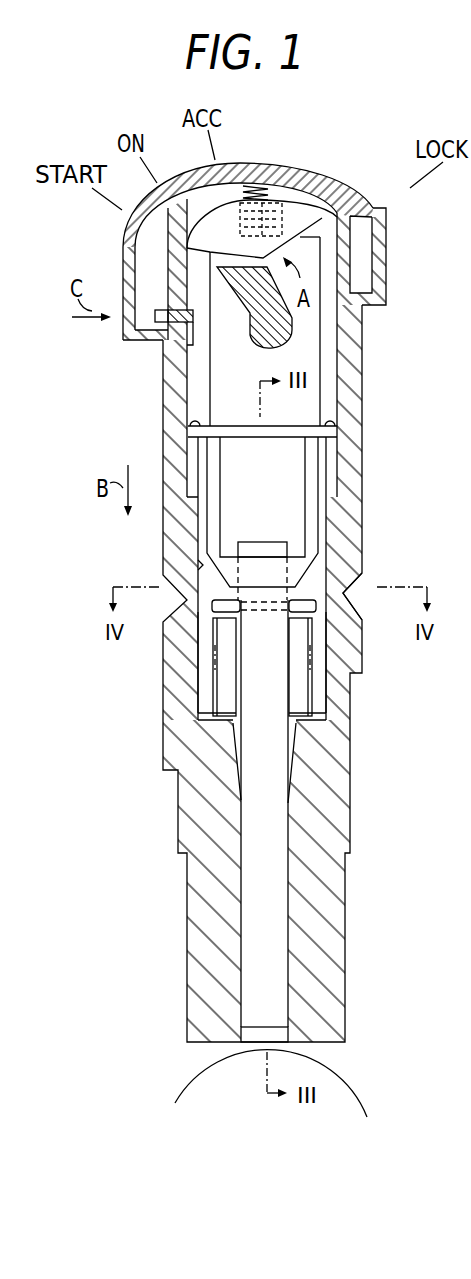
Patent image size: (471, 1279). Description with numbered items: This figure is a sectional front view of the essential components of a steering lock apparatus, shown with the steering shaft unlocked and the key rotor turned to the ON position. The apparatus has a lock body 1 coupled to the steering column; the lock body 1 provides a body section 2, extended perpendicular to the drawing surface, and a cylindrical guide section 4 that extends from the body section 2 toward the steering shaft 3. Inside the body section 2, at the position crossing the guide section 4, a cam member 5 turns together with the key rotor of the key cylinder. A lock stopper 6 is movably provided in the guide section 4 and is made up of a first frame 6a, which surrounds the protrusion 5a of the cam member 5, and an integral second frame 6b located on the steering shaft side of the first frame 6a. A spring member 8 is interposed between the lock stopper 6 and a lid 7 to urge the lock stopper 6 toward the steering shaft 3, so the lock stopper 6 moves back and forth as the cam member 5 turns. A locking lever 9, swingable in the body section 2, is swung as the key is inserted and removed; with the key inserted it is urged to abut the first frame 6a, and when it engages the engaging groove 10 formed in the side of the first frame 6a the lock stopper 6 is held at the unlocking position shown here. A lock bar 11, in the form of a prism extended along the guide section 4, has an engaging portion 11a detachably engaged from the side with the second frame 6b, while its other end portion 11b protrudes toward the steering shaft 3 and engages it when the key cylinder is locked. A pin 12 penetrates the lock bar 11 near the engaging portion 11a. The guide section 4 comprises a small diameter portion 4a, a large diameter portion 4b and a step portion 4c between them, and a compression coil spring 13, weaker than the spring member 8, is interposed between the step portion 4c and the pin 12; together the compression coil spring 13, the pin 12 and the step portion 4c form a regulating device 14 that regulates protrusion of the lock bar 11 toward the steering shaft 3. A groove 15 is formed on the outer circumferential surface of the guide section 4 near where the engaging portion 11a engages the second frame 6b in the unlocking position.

The lock body 1 is at (402, 251).
The body section 2 is at (378, 288).
The steering shaft 3 is at (358, 1078).
The guide section 4 is at (352, 778).
The small diameter portion 4a is at (240, 808).
The large diameter portion 4b is at (200, 565).
The step portion 4c is at (210, 712).
The cam member 5 is at (300, 327).
The protrusion 5a is at (212, 262).
The lock stopper 6 is at (317, 457).
The first frame 6a is at (197, 377).
The second frame 6b is at (213, 522).
The lid 7 is at (264, 190).
The spring member 8 is at (305, 175).
The locking lever 9 is at (157, 315).
The engaging groove 10 is at (183, 348).
The lock bar 11 is at (283, 763).
The engaging portion 11a is at (268, 562).
The other end portion 11b is at (297, 1033).
The pin 12 is at (215, 605).
The compression coil spring 13 is at (215, 623).
The regulating device 14 is at (330, 690).
The groove 15 is at (345, 590).